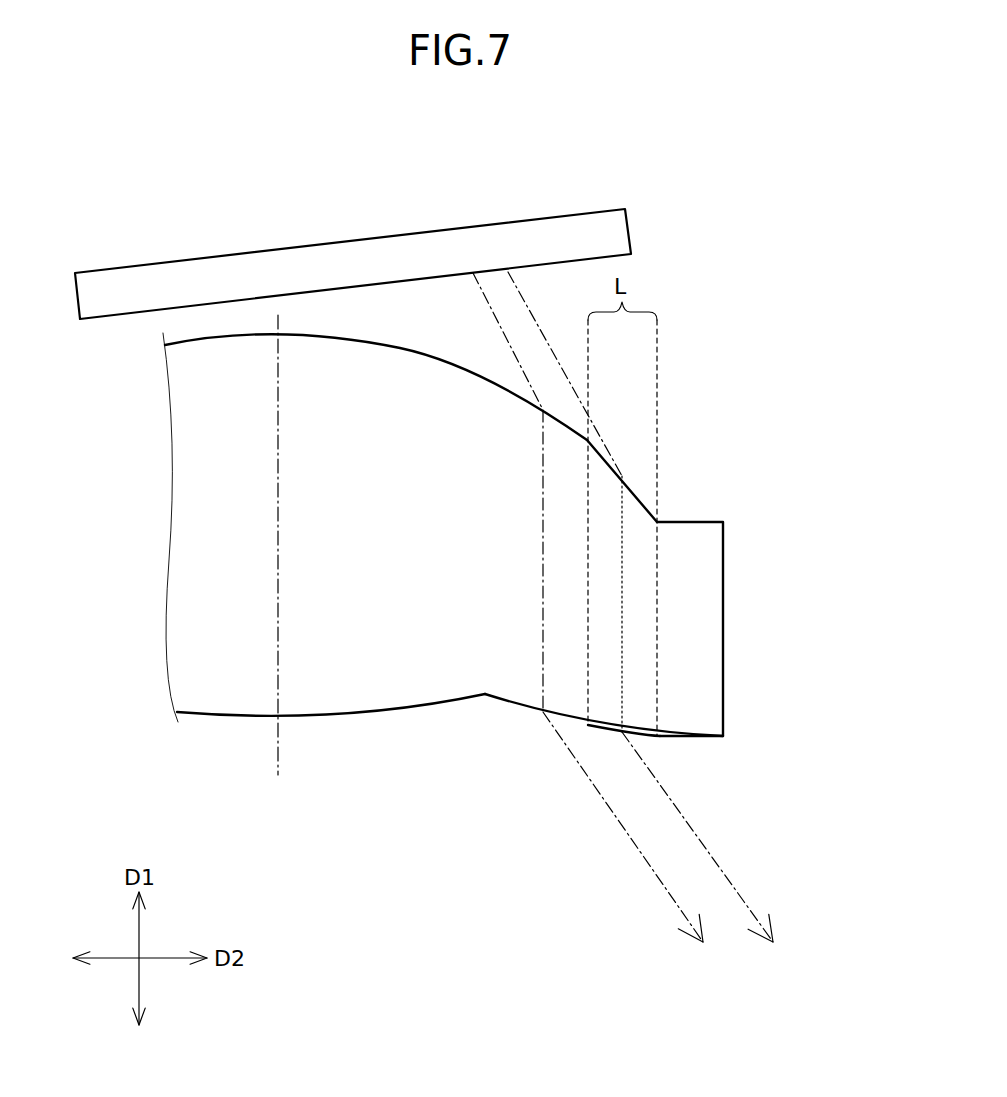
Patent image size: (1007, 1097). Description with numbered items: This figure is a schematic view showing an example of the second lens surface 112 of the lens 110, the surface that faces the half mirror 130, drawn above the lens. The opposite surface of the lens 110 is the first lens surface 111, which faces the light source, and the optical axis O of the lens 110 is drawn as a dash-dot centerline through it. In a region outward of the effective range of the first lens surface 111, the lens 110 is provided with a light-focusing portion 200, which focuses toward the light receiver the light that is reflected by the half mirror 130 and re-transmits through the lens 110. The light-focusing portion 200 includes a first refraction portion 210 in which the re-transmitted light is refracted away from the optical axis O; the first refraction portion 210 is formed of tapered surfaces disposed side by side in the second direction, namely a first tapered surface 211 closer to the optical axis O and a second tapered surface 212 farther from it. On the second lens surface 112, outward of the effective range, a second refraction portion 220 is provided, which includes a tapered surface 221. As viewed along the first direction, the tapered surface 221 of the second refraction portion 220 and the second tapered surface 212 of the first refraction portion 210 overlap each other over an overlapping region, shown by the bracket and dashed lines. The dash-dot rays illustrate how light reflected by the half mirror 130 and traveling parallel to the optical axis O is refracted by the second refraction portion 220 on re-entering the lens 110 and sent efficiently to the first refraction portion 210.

The lens 110 is at (459, 506).
The first lens surface 111 is at (355, 715).
The second lens surface 112 is at (408, 346).
The half mirror 130 is at (230, 268).
The light-focusing portion 200 is at (633, 613).
The first refraction portion 210 is at (648, 765).
The first tapered surface 211 is at (525, 712).
The second tapered surface 212 is at (607, 732).
The second refraction portion 220 is at (706, 456).
The tapered surface 221 is at (601, 455).
The optical axis O is at (275, 752).